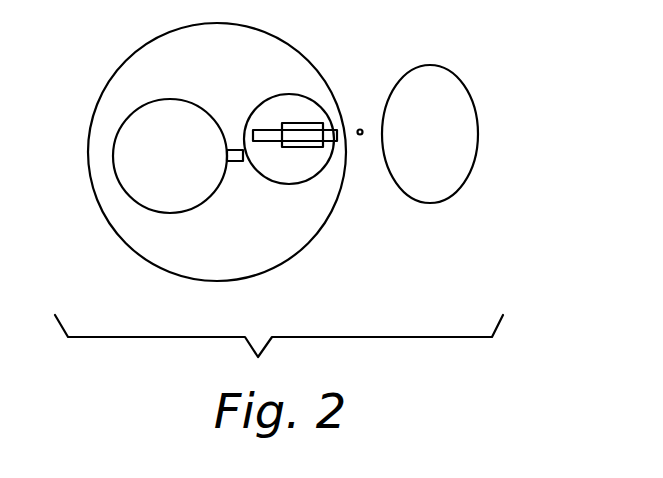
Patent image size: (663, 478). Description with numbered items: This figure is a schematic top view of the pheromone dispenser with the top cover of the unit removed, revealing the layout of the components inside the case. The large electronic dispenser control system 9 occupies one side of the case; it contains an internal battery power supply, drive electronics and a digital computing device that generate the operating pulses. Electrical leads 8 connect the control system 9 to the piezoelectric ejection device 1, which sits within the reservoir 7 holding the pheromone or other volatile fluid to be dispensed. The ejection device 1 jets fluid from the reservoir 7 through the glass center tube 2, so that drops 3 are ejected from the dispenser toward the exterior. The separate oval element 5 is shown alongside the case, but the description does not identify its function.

The piezoelectric ejection device 1 is at (288, 121).
The glass center tube 2 is at (255, 128).
The drops 3 is at (360, 130).
The oval ring 5 is at (473, 95).
The reservoir 7 is at (283, 183).
The electrical leads 8 is at (239, 162).
The electronic dispenser control system 9 is at (128, 115).